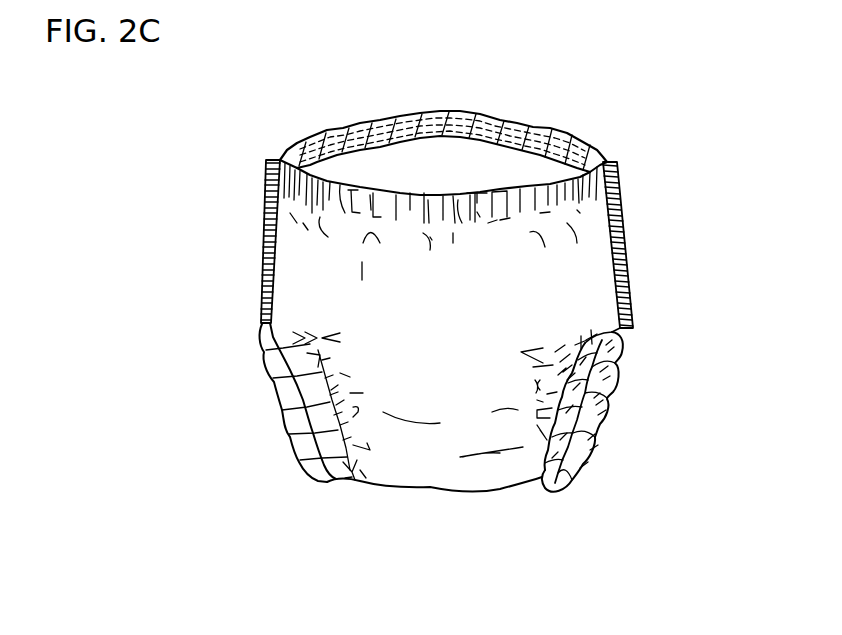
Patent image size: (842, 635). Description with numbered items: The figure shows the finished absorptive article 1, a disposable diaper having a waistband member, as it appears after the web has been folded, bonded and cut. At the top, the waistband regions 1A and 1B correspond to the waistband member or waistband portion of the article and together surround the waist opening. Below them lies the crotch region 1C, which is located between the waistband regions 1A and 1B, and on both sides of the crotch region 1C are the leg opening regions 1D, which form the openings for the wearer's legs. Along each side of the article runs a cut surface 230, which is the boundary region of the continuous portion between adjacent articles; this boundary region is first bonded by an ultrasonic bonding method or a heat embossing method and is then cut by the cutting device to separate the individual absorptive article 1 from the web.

The absorptive article 1 is at (446, 299).
The waistband region 1A is at (550, 120).
The waistband region 1B is at (582, 250).
The crotch region 1C is at (438, 462).
The leg opening region 1D is at (278, 434).
The cut surface 230 is at (268, 233).